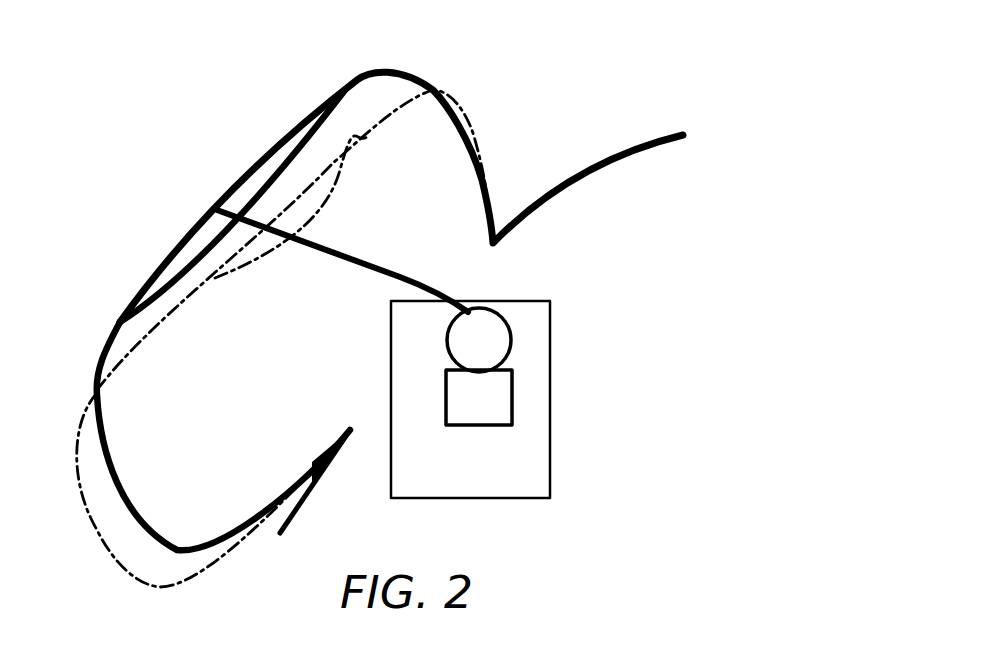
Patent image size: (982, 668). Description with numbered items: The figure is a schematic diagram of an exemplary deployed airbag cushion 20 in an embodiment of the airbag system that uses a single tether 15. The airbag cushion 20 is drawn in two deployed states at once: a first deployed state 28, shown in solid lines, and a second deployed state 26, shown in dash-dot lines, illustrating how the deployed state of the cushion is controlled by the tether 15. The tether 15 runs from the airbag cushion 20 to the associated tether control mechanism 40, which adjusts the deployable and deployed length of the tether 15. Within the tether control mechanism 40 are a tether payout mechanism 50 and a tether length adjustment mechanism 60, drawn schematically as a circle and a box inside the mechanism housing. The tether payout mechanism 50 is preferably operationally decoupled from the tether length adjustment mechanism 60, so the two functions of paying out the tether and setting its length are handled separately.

The tether 15 is at (358, 267).
The airbag cushion 20 is at (77, 450).
The second deployed state 26 is at (466, 108).
The first deployed state 28 is at (331, 102).
The tether control mechanism 40 is at (550, 342).
The tether payout mechanism 50 is at (505, 324).
The tether length adjustment mechanism 60 is at (513, 400).